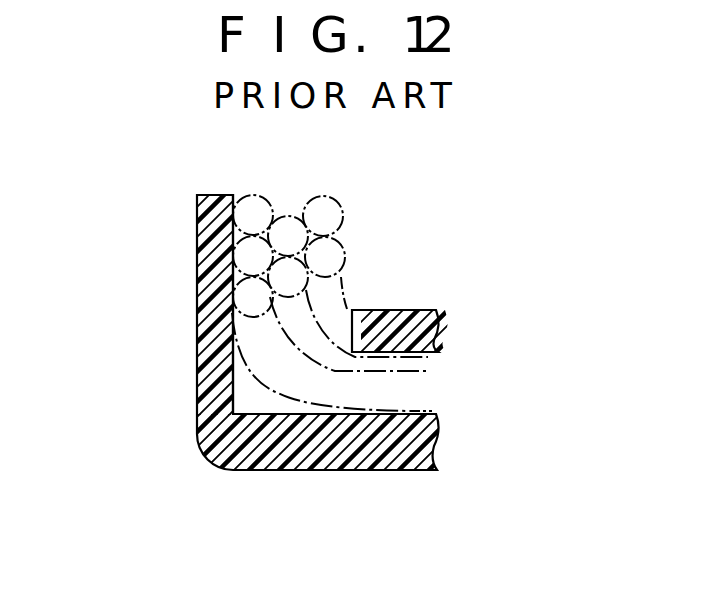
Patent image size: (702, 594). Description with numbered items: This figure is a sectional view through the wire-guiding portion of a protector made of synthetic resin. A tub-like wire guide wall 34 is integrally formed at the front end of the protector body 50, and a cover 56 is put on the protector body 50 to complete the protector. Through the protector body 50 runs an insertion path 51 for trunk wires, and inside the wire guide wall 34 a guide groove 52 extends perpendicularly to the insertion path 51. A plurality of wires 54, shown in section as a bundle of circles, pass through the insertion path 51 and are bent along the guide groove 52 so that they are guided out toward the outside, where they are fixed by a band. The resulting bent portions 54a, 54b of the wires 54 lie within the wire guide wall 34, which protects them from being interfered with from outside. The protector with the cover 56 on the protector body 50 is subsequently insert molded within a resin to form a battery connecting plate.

The wire guide wall 34 is at (205, 271).
The protector body 50 is at (315, 474).
The insertion path 51 is at (410, 411).
The guide groove 52 is at (247, 373).
The wires 54 is at (343, 218).
The bent portion 54a is at (258, 396).
The bent portion 54b is at (333, 258).
The cover 56 is at (411, 310).